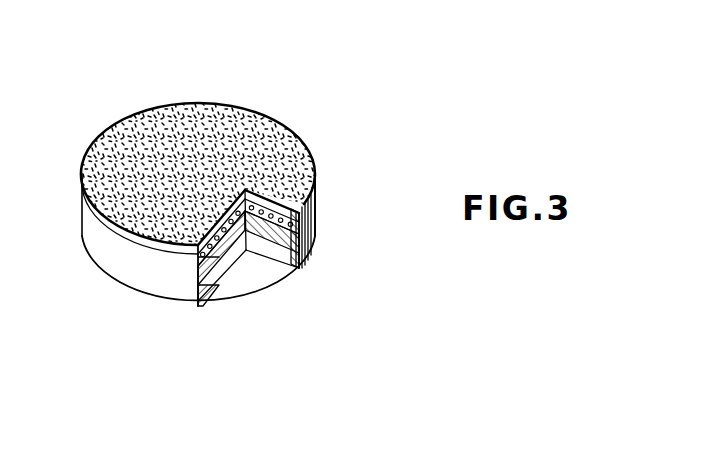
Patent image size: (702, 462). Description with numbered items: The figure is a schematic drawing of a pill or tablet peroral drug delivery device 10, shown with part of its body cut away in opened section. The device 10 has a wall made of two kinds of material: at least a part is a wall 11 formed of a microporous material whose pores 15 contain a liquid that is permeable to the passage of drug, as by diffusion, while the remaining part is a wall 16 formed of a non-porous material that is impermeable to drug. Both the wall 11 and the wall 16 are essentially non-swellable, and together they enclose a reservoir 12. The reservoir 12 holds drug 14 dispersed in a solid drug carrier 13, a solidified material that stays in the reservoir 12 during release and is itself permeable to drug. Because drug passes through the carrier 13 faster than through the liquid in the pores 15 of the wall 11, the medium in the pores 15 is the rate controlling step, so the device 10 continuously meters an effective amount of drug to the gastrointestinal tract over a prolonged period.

The drug delivery device 10 is at (299, 113).
The wall 11 is at (300, 196).
The reservoir 12 is at (212, 258).
The solid drug carrier 13 is at (256, 256).
The drug 14 is at (93, 167).
The pores 15 is at (174, 242).
The wall 16 is at (298, 268).